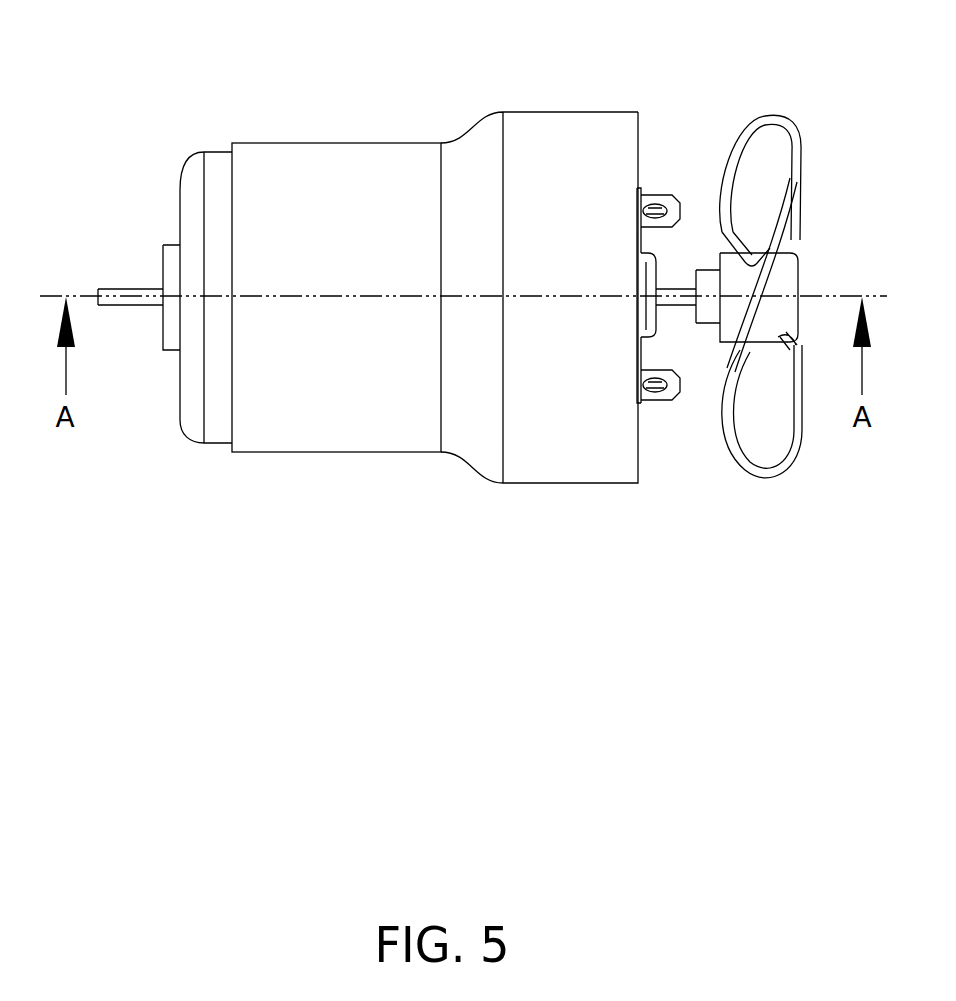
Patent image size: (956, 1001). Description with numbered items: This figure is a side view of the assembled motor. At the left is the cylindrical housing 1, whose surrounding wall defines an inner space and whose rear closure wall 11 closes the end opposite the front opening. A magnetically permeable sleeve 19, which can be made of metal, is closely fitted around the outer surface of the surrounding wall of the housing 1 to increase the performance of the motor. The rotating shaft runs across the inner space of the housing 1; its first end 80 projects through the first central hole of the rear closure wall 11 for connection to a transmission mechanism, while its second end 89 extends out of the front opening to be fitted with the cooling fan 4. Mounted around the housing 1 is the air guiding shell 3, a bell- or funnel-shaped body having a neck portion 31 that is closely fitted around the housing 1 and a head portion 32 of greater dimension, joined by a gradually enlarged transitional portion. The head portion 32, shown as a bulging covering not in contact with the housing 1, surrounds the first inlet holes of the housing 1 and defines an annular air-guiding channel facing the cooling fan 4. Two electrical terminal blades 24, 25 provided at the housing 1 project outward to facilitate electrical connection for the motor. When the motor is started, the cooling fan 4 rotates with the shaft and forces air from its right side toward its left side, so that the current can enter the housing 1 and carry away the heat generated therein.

The housing 1 is at (220, 435).
The air guiding shell 3 is at (575, 131).
The cooling fan 4 is at (765, 460).
The rear closure wall 11 is at (178, 190).
The magnetically permeable sleeve 19 is at (277, 445).
The electrical terminal blade 24 is at (663, 200).
The electrical terminal blade 25 is at (655, 398).
The neck portion 31 is at (455, 441).
The head portion 32 is at (600, 470).
The first end 80 is at (128, 289).
The second end 89 is at (680, 290).